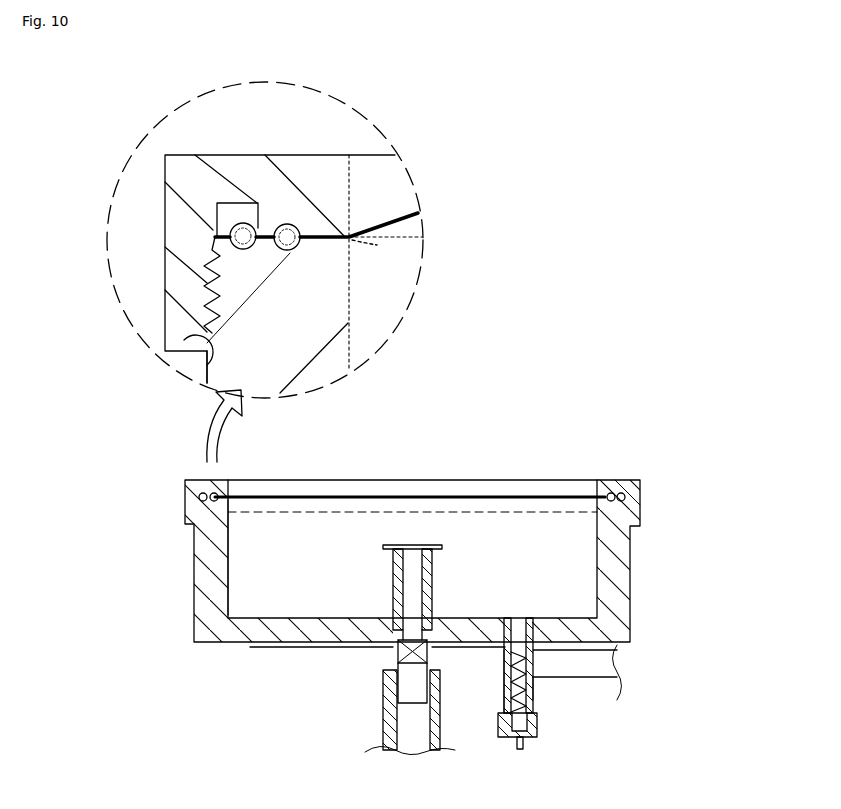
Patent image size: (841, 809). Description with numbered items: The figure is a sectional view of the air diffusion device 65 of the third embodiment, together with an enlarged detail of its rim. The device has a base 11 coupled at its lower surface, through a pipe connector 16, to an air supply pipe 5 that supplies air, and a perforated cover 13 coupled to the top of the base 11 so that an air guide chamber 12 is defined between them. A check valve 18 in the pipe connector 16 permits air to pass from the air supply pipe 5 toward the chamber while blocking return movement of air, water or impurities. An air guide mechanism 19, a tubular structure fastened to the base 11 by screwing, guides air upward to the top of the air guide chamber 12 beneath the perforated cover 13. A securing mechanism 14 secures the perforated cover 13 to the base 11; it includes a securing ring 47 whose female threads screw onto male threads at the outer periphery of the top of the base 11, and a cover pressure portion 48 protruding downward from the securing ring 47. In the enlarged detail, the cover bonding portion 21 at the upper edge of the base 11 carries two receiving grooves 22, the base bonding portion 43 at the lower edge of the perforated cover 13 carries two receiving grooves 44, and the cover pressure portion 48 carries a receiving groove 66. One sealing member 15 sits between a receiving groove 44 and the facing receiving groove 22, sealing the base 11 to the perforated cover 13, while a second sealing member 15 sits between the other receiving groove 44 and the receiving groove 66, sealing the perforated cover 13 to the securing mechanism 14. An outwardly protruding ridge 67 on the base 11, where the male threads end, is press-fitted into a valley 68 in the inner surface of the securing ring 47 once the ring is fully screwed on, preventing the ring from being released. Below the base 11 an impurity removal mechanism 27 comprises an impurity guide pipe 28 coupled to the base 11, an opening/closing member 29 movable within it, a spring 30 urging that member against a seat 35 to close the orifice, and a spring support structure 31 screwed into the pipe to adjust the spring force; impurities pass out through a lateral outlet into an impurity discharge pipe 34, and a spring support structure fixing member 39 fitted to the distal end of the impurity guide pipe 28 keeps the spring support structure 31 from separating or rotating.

The air diffusion device 65 is at (67, 119).
The receiving groove 44 is at (243, 200).
The sealing member 15 is at (257, 203).
The receiving groove 66 is at (290, 224).
The cover pressure portion 48 is at (327, 175).
The base bonding portion 43 is at (377, 245).
The receiving groove 22 is at (222, 243).
The cover bonding portion 21 is at (330, 323).
The valley 68 is at (165, 342).
The ridge 67 is at (195, 377).
The perforated cover 13 is at (483, 497).
The securing ring 47 is at (620, 478).
The securing mechanism 14 is at (657, 500).
The base 11 is at (194, 565).
The air guide chamber 12 is at (240, 586).
The air guide mechanism 19 is at (442, 570).
The seat 35 is at (522, 640).
The check valve 18 is at (398, 652).
The opening/closing member 29 is at (512, 658).
The pipe connector 16 is at (398, 675).
The impurity discharge pipe 34 is at (618, 668).
The impurity guide pipe 28 is at (512, 696).
The spring 30 is at (533, 690).
The air supply pipe 5 is at (383, 710).
The impurity removal mechanism 27 is at (553, 718).
The spring support structure fixing member 39 is at (530, 746).
The spring support structure 31 is at (528, 752).